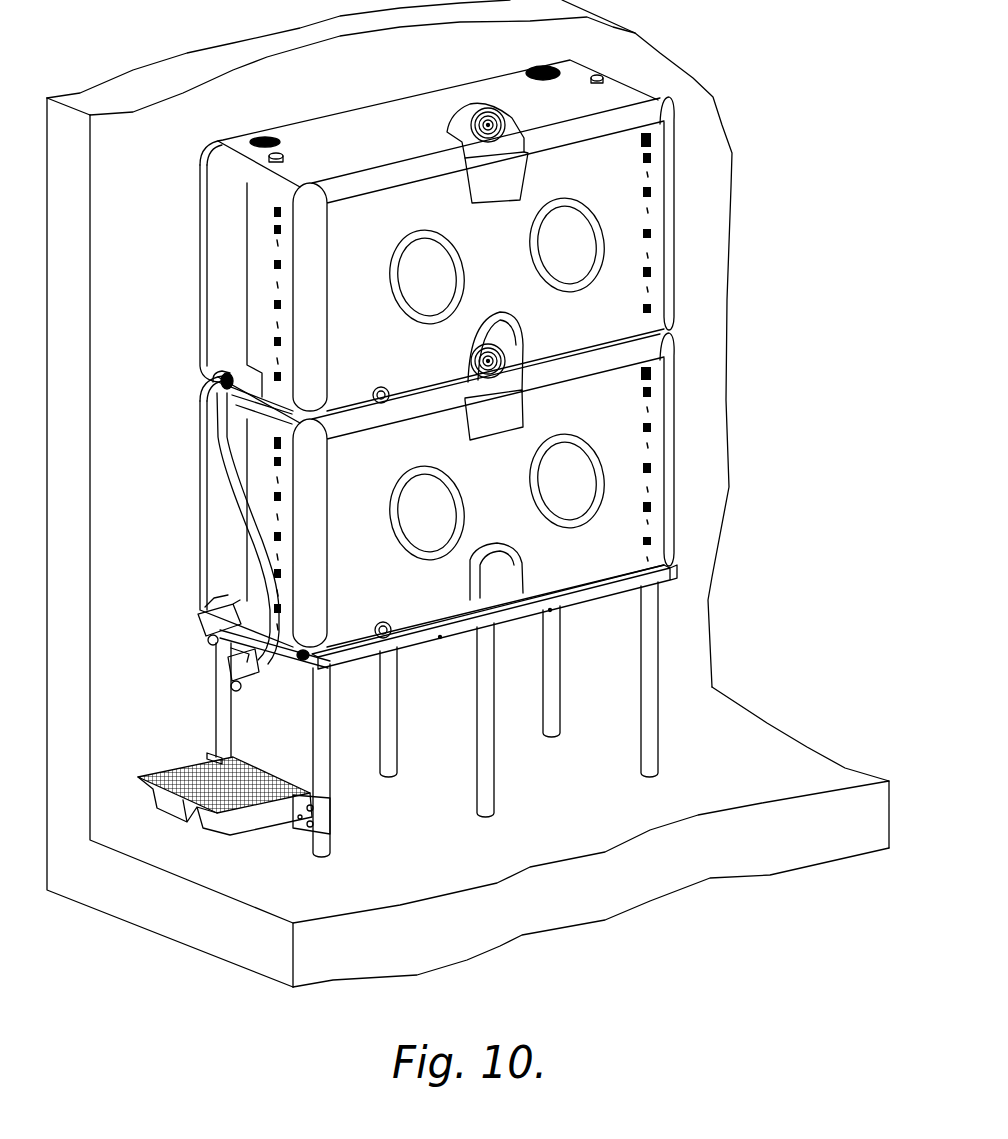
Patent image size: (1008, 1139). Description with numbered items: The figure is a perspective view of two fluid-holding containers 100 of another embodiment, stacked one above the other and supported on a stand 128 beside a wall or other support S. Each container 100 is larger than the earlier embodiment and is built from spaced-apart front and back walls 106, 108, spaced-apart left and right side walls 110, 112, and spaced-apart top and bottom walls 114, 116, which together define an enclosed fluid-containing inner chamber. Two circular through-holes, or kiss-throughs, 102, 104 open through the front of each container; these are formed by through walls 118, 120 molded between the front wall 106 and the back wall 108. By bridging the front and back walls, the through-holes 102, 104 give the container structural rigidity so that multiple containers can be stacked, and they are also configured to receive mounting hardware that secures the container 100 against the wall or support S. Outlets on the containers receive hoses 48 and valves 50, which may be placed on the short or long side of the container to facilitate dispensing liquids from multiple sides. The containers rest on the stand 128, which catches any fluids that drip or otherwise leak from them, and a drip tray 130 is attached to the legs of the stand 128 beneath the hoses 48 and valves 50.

The wall or support S is at (247, 87).
The container 100 is at (455, 339).
The through-hole 102 is at (413, 267).
The through-hole 104 is at (556, 230).
The front wall 106 is at (630, 245).
The back wall 108 is at (383, 97).
The left side wall 110 is at (230, 258).
The right side wall 112 is at (677, 147).
The top wall 114 is at (513, 97).
The bottom wall 116 is at (670, 354).
The through wall 118 is at (430, 323).
The through wall 120 is at (560, 283).
The hose 48 is at (225, 388).
The valve 50 is at (200, 612).
The stand 128 is at (587, 603).
The drip tray 130 is at (228, 824).